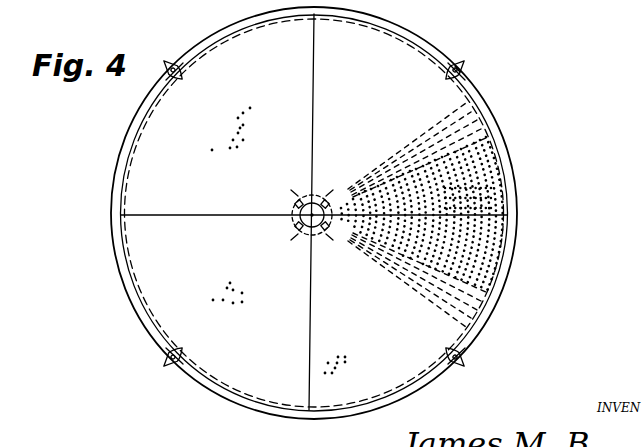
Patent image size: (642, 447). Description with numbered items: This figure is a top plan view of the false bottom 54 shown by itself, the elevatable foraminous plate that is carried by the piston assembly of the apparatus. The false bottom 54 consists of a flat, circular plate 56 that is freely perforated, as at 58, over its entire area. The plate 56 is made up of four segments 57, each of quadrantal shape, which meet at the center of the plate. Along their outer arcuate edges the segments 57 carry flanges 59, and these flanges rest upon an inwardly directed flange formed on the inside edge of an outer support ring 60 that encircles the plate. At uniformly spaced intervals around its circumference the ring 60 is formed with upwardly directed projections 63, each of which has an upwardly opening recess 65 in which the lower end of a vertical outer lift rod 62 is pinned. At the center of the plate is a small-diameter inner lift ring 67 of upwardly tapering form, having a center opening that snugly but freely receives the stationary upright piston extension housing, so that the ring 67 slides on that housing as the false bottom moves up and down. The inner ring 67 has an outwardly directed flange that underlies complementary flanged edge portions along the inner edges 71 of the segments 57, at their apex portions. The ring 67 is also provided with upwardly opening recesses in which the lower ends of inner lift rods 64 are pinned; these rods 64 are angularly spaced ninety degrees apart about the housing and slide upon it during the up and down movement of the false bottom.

The false bottom 54 is at (471, 163).
The flat circular plate 56 is at (402, 62).
The segments 57 is at (386, 19).
The perforations 58 is at (490, 210).
The flanges 59 is at (477, 107).
The outer support ring 60 is at (247, 411).
The outer lift rods 62 is at (176, 70).
The upwardly directed projections 63 is at (178, 78).
The inner lift rods 64 is at (302, 193).
The upwardly opening recesses 65 is at (460, 68).
The inner lift ring 67 is at (293, 225).
The inner edges 71 is at (330, 205).